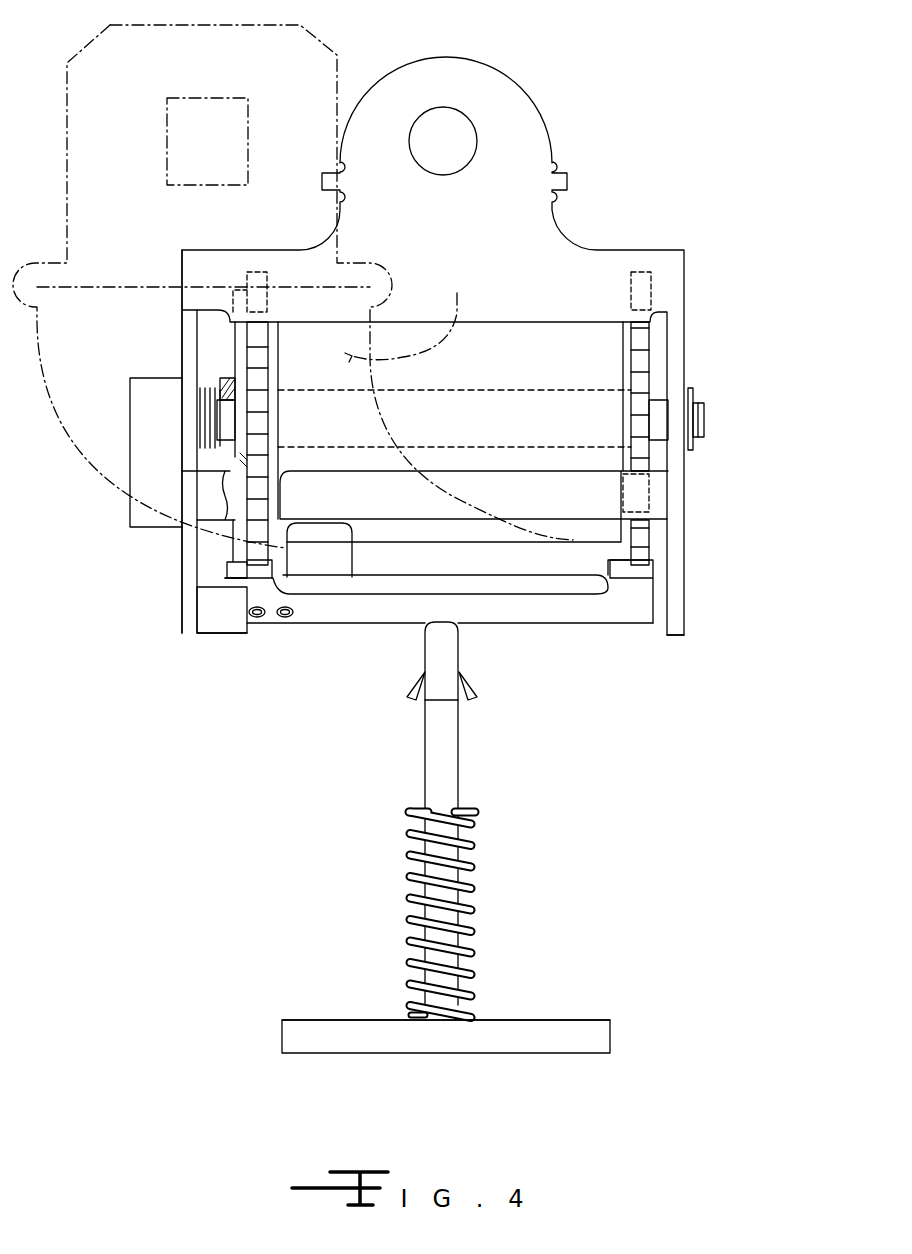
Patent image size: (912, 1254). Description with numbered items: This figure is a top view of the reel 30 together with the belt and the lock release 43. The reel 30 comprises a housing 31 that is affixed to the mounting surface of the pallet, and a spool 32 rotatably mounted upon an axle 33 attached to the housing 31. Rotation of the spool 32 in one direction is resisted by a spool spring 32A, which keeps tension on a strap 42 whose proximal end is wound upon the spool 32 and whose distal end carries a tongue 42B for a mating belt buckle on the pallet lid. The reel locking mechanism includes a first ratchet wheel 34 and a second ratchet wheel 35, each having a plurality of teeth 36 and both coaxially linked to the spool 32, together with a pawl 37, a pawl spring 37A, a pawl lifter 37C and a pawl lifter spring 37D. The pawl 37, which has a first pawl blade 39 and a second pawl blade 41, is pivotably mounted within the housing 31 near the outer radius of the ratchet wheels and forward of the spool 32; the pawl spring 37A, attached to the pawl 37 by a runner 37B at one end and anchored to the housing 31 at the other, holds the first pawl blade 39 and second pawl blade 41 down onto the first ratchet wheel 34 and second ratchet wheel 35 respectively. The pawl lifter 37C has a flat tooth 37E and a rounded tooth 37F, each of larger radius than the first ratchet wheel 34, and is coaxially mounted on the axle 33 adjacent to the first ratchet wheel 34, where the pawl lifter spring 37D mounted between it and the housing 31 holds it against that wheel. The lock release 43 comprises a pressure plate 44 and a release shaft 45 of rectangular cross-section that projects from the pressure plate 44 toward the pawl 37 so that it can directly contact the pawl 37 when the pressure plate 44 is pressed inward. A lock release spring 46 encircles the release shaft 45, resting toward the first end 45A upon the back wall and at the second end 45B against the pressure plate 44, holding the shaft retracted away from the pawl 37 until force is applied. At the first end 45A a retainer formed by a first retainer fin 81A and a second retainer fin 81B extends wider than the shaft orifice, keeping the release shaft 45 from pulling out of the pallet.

The reel 30 is at (158, 254).
The housing 31 is at (668, 266).
The spool 32 is at (323, 457).
The spool spring 32A is at (173, 450).
The axle 33 is at (659, 417).
The first ratchet wheel 34 is at (230, 633).
The second ratchet wheel 35 is at (643, 535).
The teeth 36 is at (641, 417).
The pawl 37 is at (477, 590).
The pawl spring 37A is at (239, 622).
The runner 37B is at (318, 565).
The pawl lifter 37C is at (235, 453).
The pawl lifter spring 37D is at (202, 390).
The flat tooth 37E is at (233, 498).
The rounded tooth 37F is at (235, 565).
The first pawl blade 39 is at (237, 555).
The second pawl blade 41 is at (643, 572).
The strap 42 is at (457, 293).
The tongue 42B is at (293, 107).
The lock release 43 is at (270, 1000).
The pressure plate 44 is at (452, 1053).
The release shaft 45 is at (442, 828).
The first end of the release shaft 45A is at (437, 662).
The second end of the release shaft 45B is at (410, 1012).
The lock release spring 46 is at (472, 948).
The first retainer fin 81A is at (423, 673).
The second retainer fin 81B is at (477, 700).